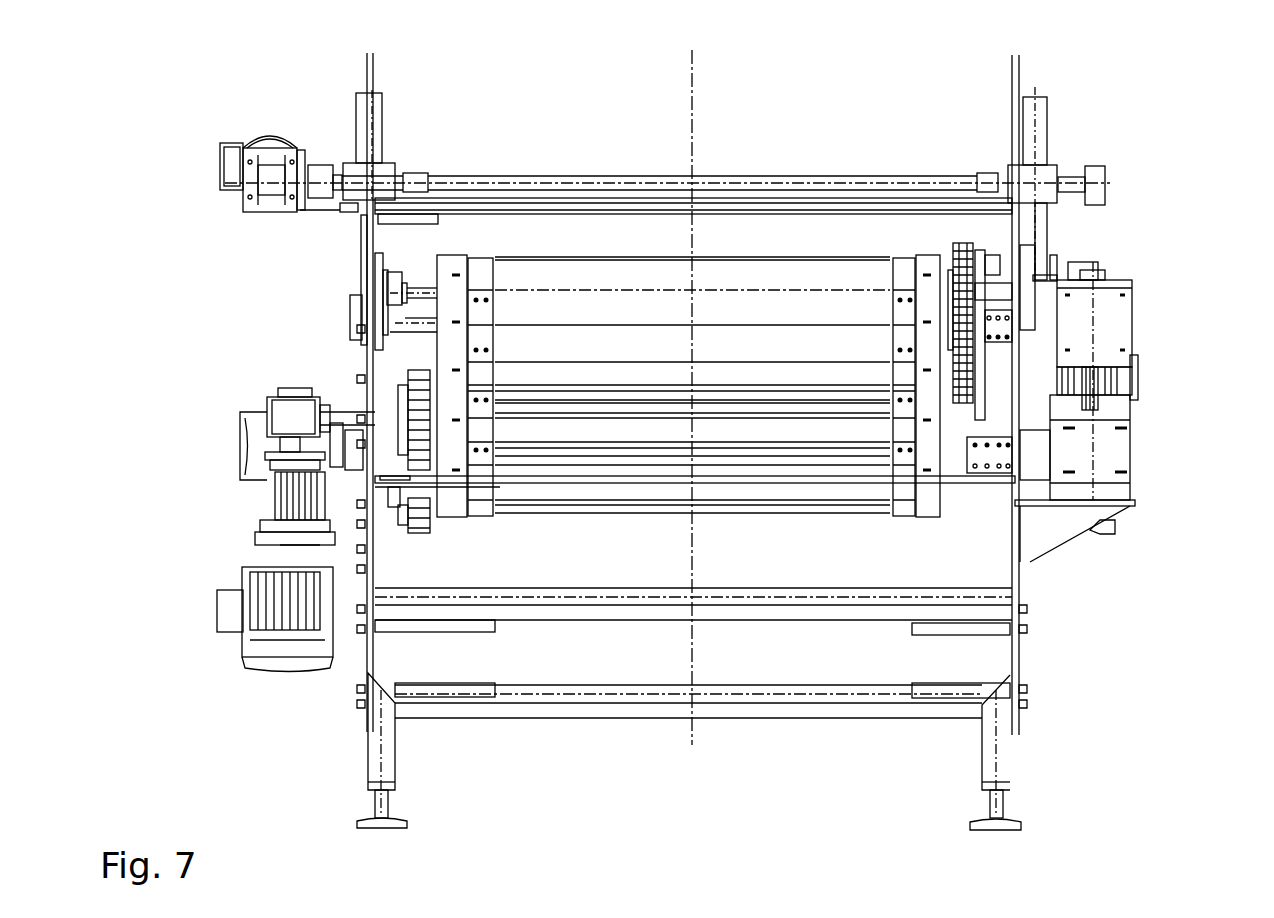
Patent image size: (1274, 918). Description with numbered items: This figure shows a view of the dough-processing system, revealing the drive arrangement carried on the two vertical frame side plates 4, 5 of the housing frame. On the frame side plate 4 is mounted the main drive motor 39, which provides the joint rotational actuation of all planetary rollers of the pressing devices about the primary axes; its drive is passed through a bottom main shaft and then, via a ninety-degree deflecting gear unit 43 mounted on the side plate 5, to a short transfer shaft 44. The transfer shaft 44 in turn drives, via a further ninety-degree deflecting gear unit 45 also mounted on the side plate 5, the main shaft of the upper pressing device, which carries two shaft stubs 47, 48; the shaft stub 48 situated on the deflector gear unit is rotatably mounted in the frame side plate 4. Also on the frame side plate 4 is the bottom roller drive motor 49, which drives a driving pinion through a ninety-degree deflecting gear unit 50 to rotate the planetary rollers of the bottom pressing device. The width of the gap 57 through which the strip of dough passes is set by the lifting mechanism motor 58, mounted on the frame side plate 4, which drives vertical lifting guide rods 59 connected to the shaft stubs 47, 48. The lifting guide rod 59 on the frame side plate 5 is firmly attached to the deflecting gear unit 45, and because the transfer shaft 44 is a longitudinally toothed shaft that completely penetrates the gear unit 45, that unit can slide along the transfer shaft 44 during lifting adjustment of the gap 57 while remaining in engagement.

The frame side plate 4 is at (367, 118).
The frame side plate 5 is at (1019, 70).
The main drive motor 39 is at (270, 598).
The 90° deflecting gear unit 43 is at (1110, 457).
The transfer shaft 44 is at (1100, 395).
The 90° deflecting gear unit 45 is at (1120, 338).
The shaft stub 47 is at (1005, 320).
The shaft stub 48 is at (415, 328).
The bottom roller drive motor 49 is at (275, 510).
The 90° deflecting gear unit 50 is at (270, 405).
The gap 57 is at (760, 388).
The lifting mechanism motor 58 is at (230, 185).
The lifting guide rod 59 is at (1043, 128).